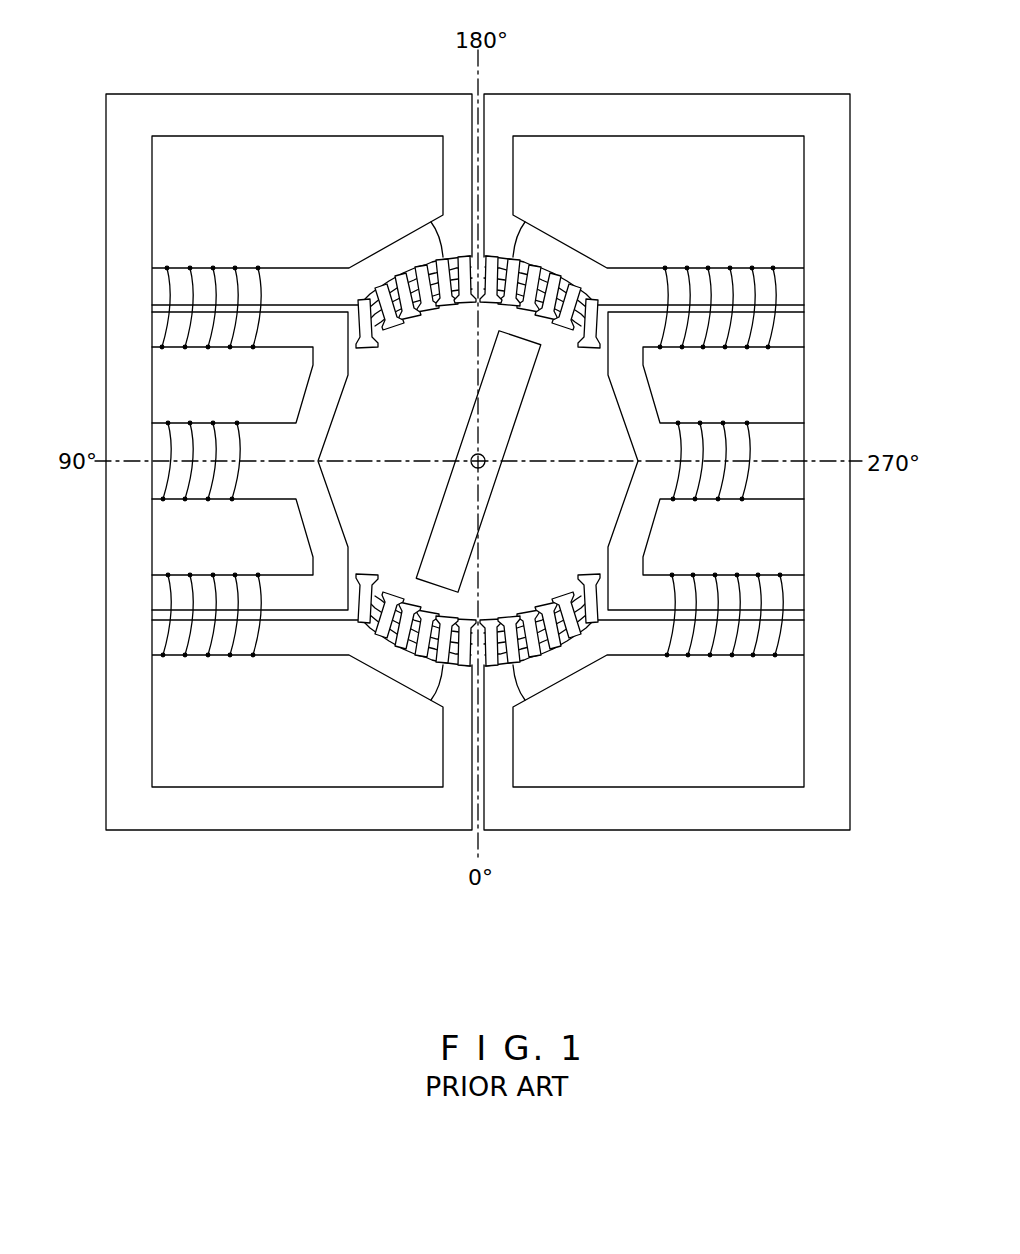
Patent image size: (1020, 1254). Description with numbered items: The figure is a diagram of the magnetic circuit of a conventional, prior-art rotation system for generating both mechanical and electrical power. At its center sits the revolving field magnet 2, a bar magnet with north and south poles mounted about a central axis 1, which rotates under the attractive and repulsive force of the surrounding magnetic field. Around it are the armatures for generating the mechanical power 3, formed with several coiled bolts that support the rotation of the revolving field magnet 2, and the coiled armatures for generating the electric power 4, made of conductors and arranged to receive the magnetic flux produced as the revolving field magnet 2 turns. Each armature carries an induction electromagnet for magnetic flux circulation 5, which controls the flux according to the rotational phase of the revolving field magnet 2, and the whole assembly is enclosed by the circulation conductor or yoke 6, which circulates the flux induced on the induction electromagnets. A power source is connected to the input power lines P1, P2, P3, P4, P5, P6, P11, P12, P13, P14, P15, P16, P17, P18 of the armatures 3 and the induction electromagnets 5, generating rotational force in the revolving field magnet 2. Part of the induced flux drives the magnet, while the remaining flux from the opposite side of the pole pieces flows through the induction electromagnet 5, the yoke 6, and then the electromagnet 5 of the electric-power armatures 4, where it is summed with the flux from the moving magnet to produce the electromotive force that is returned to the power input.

The rotor shaft 1 is at (472, 466).
The revolving field magnet 2 is at (463, 433).
The armatures for generating the mechanical power 3 is at (577, 238).
The coiled armatures for generating the electric power 4 is at (153, 466).
The induction electromagnet for magnetic flux circulation 5 is at (155, 282).
The circulation conductor (yoke) 6 is at (837, 705).
The input power line P1 is at (762, 423).
The input power line P2 is at (252, 423).
The input power line P3 is at (778, 657).
The input power line P4 is at (781, 268).
The input power line P5 is at (256, 657).
The input power line P6 is at (268, 268).
The input power line P11 is at (507, 257).
The input power line P12 is at (596, 345).
The input power line P13 is at (497, 612).
The input power line P14 is at (598, 582).
The input power line P15 is at (358, 568).
The input power line P16 is at (468, 612).
The input power line P17 is at (352, 305).
The input power line P18 is at (442, 262).